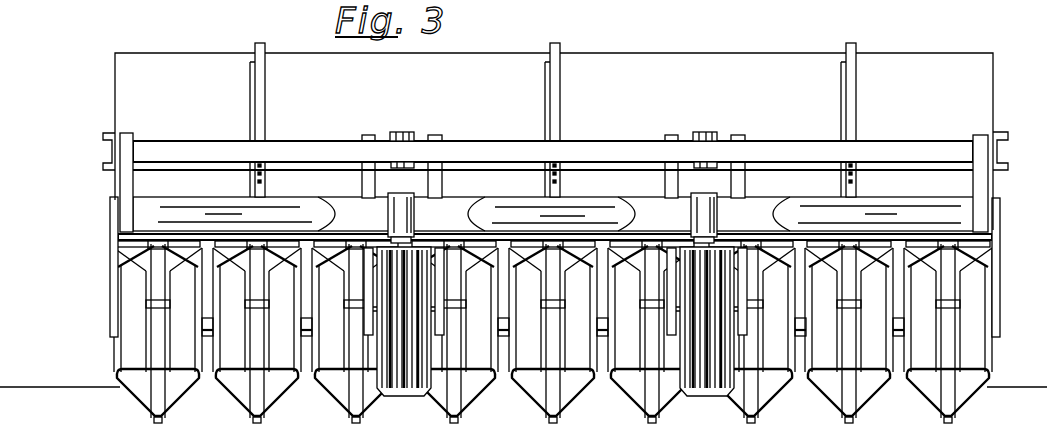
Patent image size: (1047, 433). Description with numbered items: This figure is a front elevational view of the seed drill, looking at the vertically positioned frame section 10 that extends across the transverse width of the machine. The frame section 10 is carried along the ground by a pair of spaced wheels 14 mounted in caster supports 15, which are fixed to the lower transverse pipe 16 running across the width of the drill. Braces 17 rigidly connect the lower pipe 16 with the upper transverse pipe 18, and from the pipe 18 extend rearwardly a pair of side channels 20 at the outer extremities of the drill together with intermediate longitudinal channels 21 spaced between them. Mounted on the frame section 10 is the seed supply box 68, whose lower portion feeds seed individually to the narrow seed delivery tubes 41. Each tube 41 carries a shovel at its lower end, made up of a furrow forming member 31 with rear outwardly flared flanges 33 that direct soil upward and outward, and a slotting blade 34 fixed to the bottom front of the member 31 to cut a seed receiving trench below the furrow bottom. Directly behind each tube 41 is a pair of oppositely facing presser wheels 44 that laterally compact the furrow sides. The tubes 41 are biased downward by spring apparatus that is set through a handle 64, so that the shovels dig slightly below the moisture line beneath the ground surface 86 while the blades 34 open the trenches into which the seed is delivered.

The vertically positioned frame section 10 is at (998, 130).
The wheels 14 is at (403, 381).
The caster supports 15 is at (413, 223).
The lower transverse pipe 16 is at (878, 207).
The braces 17 is at (740, 175).
The upper transverse pipe 18 is at (929, 152).
The side channels 20 is at (112, 147).
The intermediate longitudinal channels 21 is at (412, 131).
The furrow forming member 31 is at (181, 398).
The rear outwardly flared flanges 33 is at (823, 382).
The slotting blade 34 is at (161, 421).
The seed delivery tube 41 is at (258, 363).
The presser wheels 44 is at (485, 382).
The handle 64 is at (266, 125).
The seed supply box 68 is at (657, 98).
The ground surface 86 is at (1010, 387).